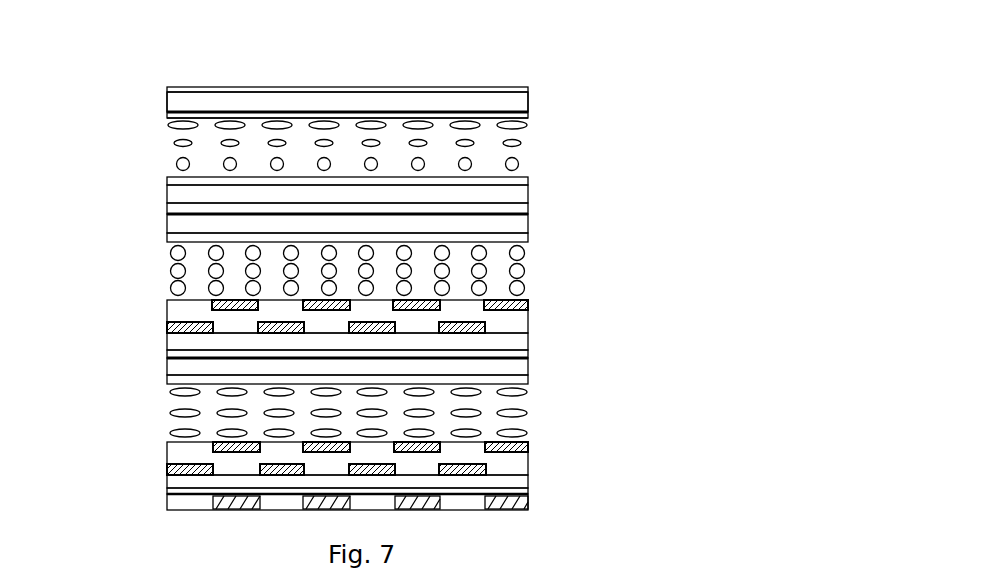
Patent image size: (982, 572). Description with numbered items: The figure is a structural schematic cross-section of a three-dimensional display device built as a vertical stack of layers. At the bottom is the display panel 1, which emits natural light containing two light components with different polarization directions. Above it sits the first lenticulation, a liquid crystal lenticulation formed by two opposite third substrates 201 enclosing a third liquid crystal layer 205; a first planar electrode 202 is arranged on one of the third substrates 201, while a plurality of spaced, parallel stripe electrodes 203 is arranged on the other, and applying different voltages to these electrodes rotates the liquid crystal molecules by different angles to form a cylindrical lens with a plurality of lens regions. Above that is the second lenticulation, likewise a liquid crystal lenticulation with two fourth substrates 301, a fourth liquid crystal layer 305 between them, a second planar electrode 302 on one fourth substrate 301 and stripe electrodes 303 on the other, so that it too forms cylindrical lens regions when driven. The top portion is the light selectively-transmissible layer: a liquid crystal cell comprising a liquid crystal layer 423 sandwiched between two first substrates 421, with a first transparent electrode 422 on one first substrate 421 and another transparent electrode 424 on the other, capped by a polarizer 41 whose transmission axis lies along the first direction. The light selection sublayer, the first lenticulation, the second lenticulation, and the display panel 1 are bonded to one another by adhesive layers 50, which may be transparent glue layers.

The display panel 1 is at (528, 506).
The polarizer 41 is at (528, 87).
The first substrate 421 is at (528, 99).
The first transparent electrode 422 is at (528, 118).
The liquid crystal layer 423 is at (167, 142).
The another transparent electrode 424 is at (528, 175).
The adhesive layer 50 is at (177, 207).
The third substrate 201 is at (528, 365).
The first planar electrode 202 is at (528, 380).
The stripe electrodes 203 is at (528, 447).
The third liquid crystal layer 205 is at (173, 415).
The fourth substrate 301 is at (528, 223).
The second planar electrode 302 is at (528, 240).
The stripe electrodes 303 is at (528, 307).
The fourth liquid crystal layer 305 is at (172, 268).